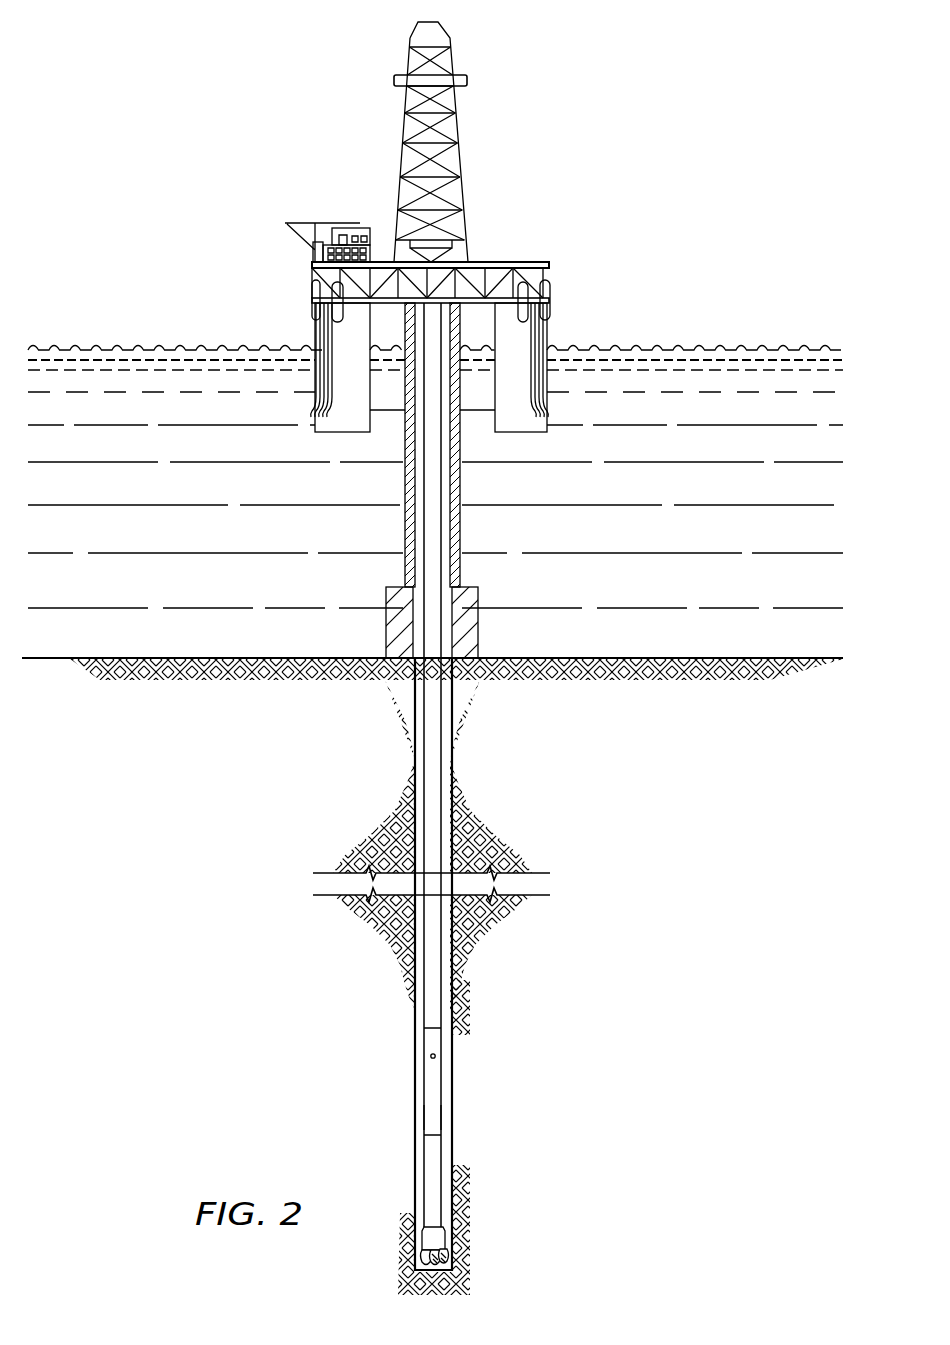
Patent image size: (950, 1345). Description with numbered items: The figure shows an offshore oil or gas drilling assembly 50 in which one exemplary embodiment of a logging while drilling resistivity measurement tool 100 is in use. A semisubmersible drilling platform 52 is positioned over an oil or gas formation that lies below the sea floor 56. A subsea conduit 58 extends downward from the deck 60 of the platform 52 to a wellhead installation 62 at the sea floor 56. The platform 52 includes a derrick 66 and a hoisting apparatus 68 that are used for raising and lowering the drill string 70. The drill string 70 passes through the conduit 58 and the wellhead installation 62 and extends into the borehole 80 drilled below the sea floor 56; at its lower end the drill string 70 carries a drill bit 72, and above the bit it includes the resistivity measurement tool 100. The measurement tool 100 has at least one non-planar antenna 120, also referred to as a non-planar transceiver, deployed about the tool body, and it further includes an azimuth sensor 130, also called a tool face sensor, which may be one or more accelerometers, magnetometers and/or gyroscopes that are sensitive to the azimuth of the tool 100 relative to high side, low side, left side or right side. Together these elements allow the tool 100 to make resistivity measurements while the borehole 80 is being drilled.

The offshore oil or gas drilling assembly 50 is at (534, 149).
The semisubmersible drilling platform 52 is at (540, 262).
The sea floor 56 is at (705, 658).
The subsea conduit 58 is at (460, 528).
The deck 60 is at (550, 298).
The wellhead installation 62 is at (470, 587).
The derrick 66 is at (437, 249).
The hoisting apparatus 68 is at (453, 63).
The drill string 70 is at (430, 448).
The drill bit 72 is at (454, 1258).
The borehole 80 is at (408, 778).
The resistivity measurement tool 100 is at (442, 1077).
The non-planar antenna 120 is at (441, 1118).
The azimuth sensor 130 is at (431, 1056).